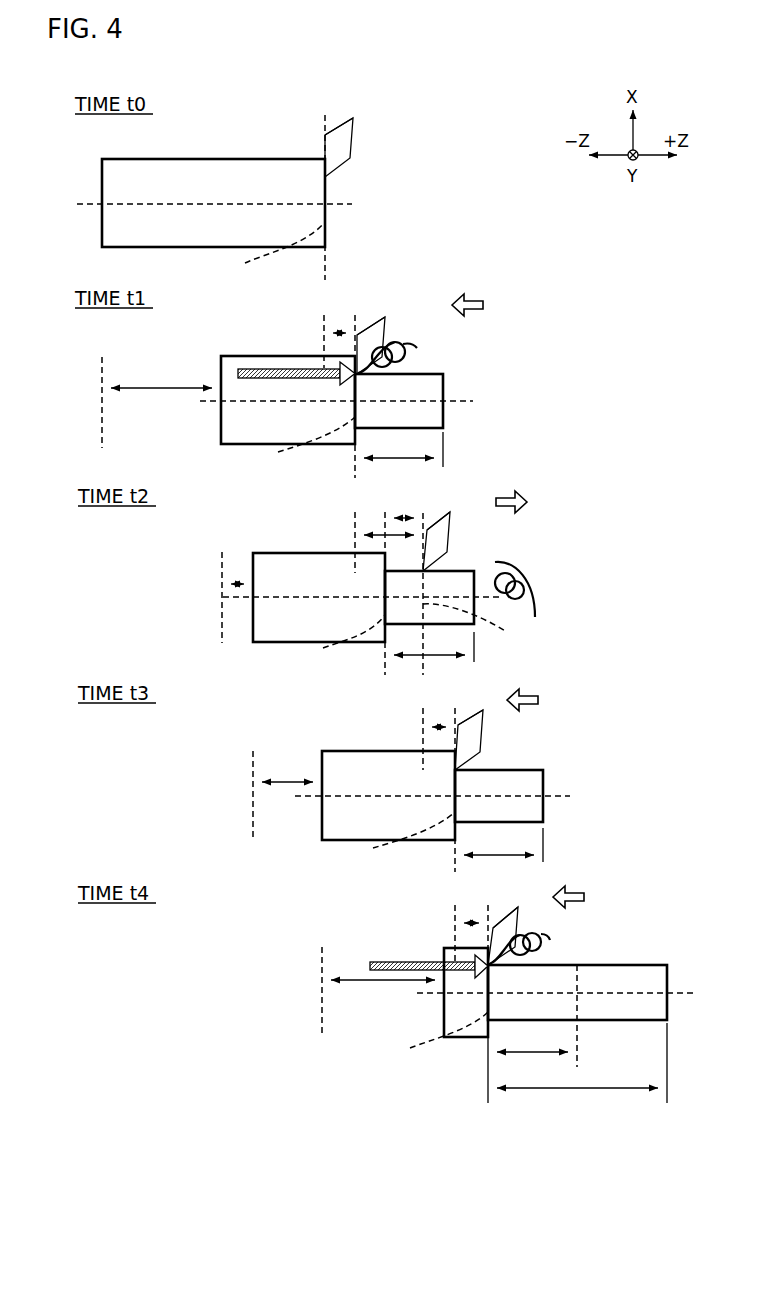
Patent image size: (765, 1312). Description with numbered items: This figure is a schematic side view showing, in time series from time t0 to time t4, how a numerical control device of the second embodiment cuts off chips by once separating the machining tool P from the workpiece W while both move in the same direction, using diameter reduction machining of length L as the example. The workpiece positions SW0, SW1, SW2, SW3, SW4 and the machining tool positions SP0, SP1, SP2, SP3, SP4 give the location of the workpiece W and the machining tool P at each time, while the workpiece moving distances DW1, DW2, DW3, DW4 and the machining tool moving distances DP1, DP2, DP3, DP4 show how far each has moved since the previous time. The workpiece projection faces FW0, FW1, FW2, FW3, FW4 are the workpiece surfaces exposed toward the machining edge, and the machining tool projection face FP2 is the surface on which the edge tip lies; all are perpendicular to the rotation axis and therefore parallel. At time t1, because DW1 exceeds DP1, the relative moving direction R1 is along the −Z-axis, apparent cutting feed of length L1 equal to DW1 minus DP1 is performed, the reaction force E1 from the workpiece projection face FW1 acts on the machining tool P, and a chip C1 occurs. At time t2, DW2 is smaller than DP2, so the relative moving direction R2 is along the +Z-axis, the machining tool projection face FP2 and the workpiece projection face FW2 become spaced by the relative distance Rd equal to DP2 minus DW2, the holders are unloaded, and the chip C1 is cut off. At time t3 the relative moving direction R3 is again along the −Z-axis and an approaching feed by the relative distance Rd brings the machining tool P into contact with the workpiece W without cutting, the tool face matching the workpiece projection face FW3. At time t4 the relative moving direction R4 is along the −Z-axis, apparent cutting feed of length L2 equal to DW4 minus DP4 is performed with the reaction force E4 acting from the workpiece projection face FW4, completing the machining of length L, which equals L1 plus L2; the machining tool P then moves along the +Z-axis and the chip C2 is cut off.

The workpiece W is at (212, 230).
The machining tool P is at (343, 137).
The chip C1 is at (413, 350).
The chip C2 is at (547, 942).
The workpiece position SW0 is at (223, 156).
The workpiece position SW1 is at (257, 352).
The workpiece position SW2 is at (282, 551).
The workpiece position SW3 is at (347, 749).
The workpiece position SW4 is at (441, 951).
The machining tool position SP0 is at (354, 118).
The machining tool position SP1 is at (383, 317).
The machining tool position SP2 is at (442, 517).
The machining tool position SP3 is at (473, 714).
The machining tool position SP4 is at (505, 916).
The workpiece projection face FW0 is at (273, 252).
The workpiece projection face FW1 is at (304, 447).
The workpiece projection face FW2 is at (342, 644).
The machining tool projection face FP2 is at (482, 624).
The workpiece projection face FW3 is at (404, 843).
The workpiece projection face FW4 is at (437, 1043).
The workpiece moving distance DW1 is at (161, 371).
The workpiece moving distance DW2 is at (206, 584).
The workpiece moving distance DW3 is at (287, 766).
The workpiece moving distance DW4 is at (383, 993).
The machining tool moving distance DP1 is at (318, 332).
The machining tool moving distance DP2 is at (364, 534).
The machining tool moving distance DP3 is at (413, 727).
The machining tool moving distance DP4 is at (446, 927).
The relative distance Rd is at (404, 503).
The length L1 is at (449, 645).
The length L2 is at (532, 1041).
The length L is at (577, 1079).
The reaction force E1 is at (296, 381).
The reaction force E4 is at (415, 966).
The relative moving direction R1 is at (482, 305).
The relative moving direction R2 is at (526, 502).
The relative moving direction R3 is at (537, 700).
The relative moving direction R4 is at (583, 897).